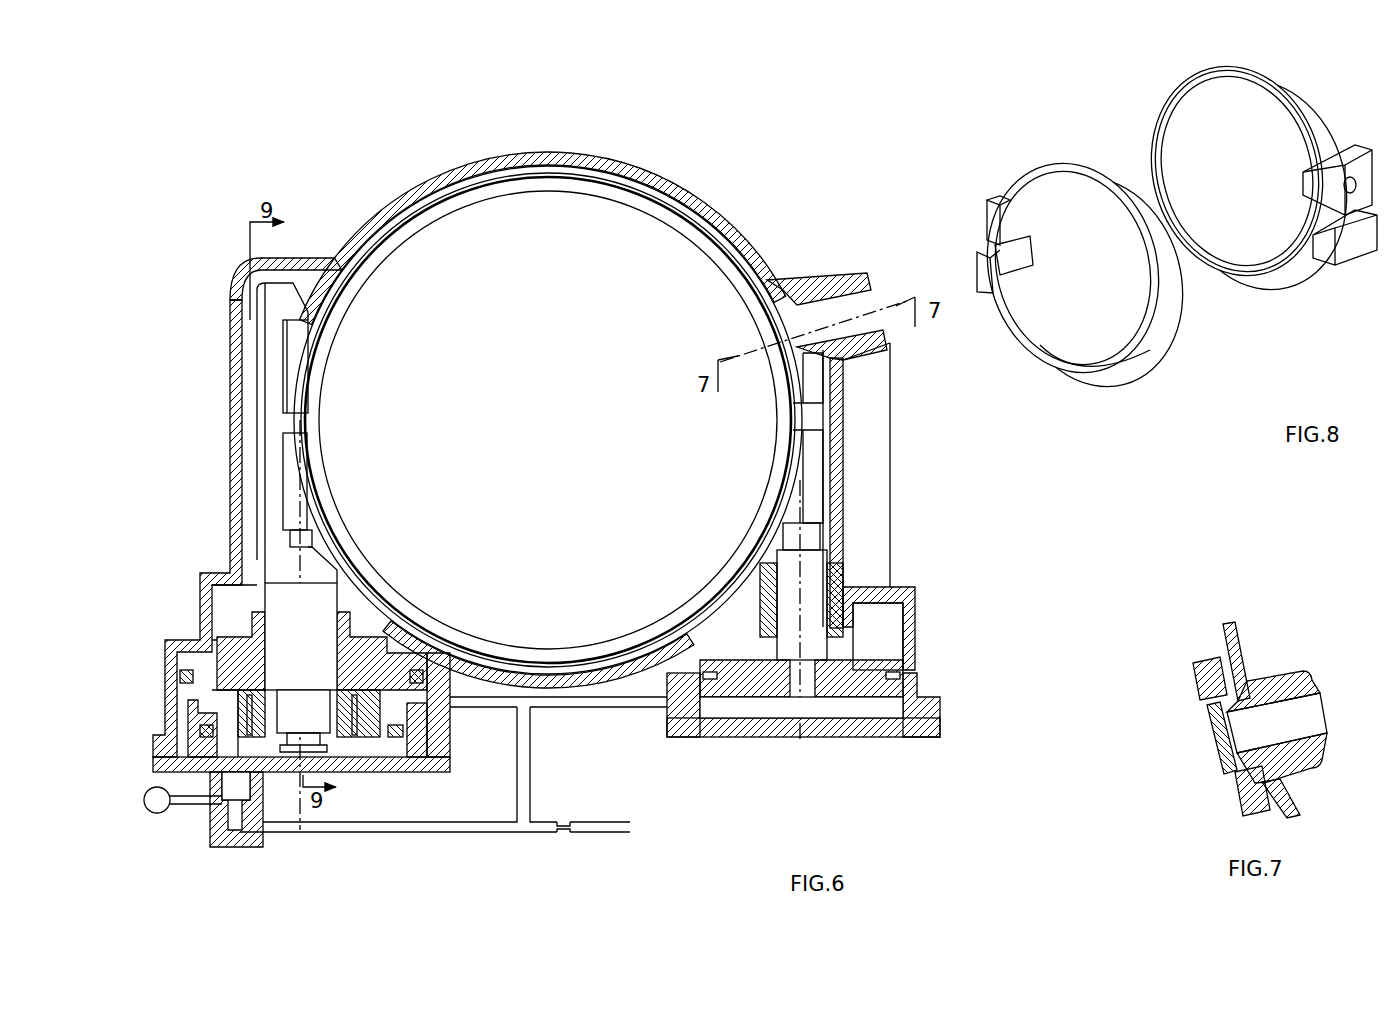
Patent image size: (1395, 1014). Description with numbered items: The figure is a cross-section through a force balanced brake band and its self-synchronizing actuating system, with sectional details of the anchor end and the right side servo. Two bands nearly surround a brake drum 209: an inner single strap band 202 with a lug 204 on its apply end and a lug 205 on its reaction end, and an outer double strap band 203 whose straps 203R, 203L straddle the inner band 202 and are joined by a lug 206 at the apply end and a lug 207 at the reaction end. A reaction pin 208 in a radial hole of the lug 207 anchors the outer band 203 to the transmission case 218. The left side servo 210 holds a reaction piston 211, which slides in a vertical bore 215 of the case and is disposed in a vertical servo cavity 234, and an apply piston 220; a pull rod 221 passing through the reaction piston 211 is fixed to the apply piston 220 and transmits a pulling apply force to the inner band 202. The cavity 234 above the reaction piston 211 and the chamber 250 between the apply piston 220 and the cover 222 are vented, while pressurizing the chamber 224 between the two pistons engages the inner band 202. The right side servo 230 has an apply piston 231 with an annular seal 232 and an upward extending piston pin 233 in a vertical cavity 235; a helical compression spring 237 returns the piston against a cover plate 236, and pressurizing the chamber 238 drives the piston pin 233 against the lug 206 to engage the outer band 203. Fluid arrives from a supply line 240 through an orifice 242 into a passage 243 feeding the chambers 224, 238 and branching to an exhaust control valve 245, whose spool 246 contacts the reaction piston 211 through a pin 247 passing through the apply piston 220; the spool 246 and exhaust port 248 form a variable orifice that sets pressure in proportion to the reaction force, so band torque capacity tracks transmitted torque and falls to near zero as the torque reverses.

In FIG. 8, the inner single strap band 202 is at (1130, 402).
In FIG. 7, the inner single strap band 202 is at (1210, 733).
In FIG. 8, the outer double strap band 203 is at (1312, 272).
In FIG. 8, the left strap of outer band 203L is at (1152, 140).
In FIG. 7, the left strap of outer band 203L is at (1235, 805).
In FIG. 8, the right strap of outer band 203R is at (1288, 78).
In FIG. 7, the right strap of outer band 203R is at (1195, 686).
In FIG. 6, the lug 204 is at (293, 358).
In FIG. 6, the lug 205 is at (292, 483).
In FIG. 6, the lug 206 is at (806, 465).
In FIG. 6, the lug 207 is at (783, 305).
In FIG. 6, the reaction pin 208 is at (862, 302).
In FIG. 6, the brake drum 209 is at (684, 228).
In FIG. 6, the left side servo 210 is at (170, 598).
In FIG. 6, the reaction piston 211 is at (215, 657).
In FIG. 6, the vertical bore 215 is at (397, 627).
In FIG. 6, the transmission case 218 is at (704, 204).
In FIG. 6, the apply piston 220 is at (372, 742).
In FIG. 6, the pull rod 221 is at (277, 568).
In FIG. 6, the cover 222 is at (222, 768).
In FIG. 6, the chamber 224 is at (213, 706).
In FIG. 6, the right side servo 230 is at (928, 538).
In FIG. 6, the apply piston 231 is at (826, 697).
In FIG. 6, the annular seal 232 is at (915, 668).
In FIG. 6, the piston pin 233 is at (813, 543).
In FIG. 6, the servo cavity 234 is at (237, 597).
In FIG. 6, the vertical cavity 235 is at (883, 622).
In FIG. 6, the cover plate 236 is at (902, 730).
In FIG. 6, the helical compression spring 237 is at (895, 590).
In FIG. 6, the chamber 238 is at (742, 706).
In FIG. 6, the supply line 240 is at (600, 835).
In FIG. 6, the orifice 242 is at (566, 835).
In FIG. 6, the passage 243 is at (398, 832).
In FIG. 6, the exhaust control valve 245 is at (205, 862).
In FIG. 6, the spool 246 is at (262, 790).
In FIG. 6, the pin 247 is at (222, 748).
In FIG. 6, the exhaust port 248 is at (183, 803).
In FIG. 6, the chamber 250 is at (404, 745).